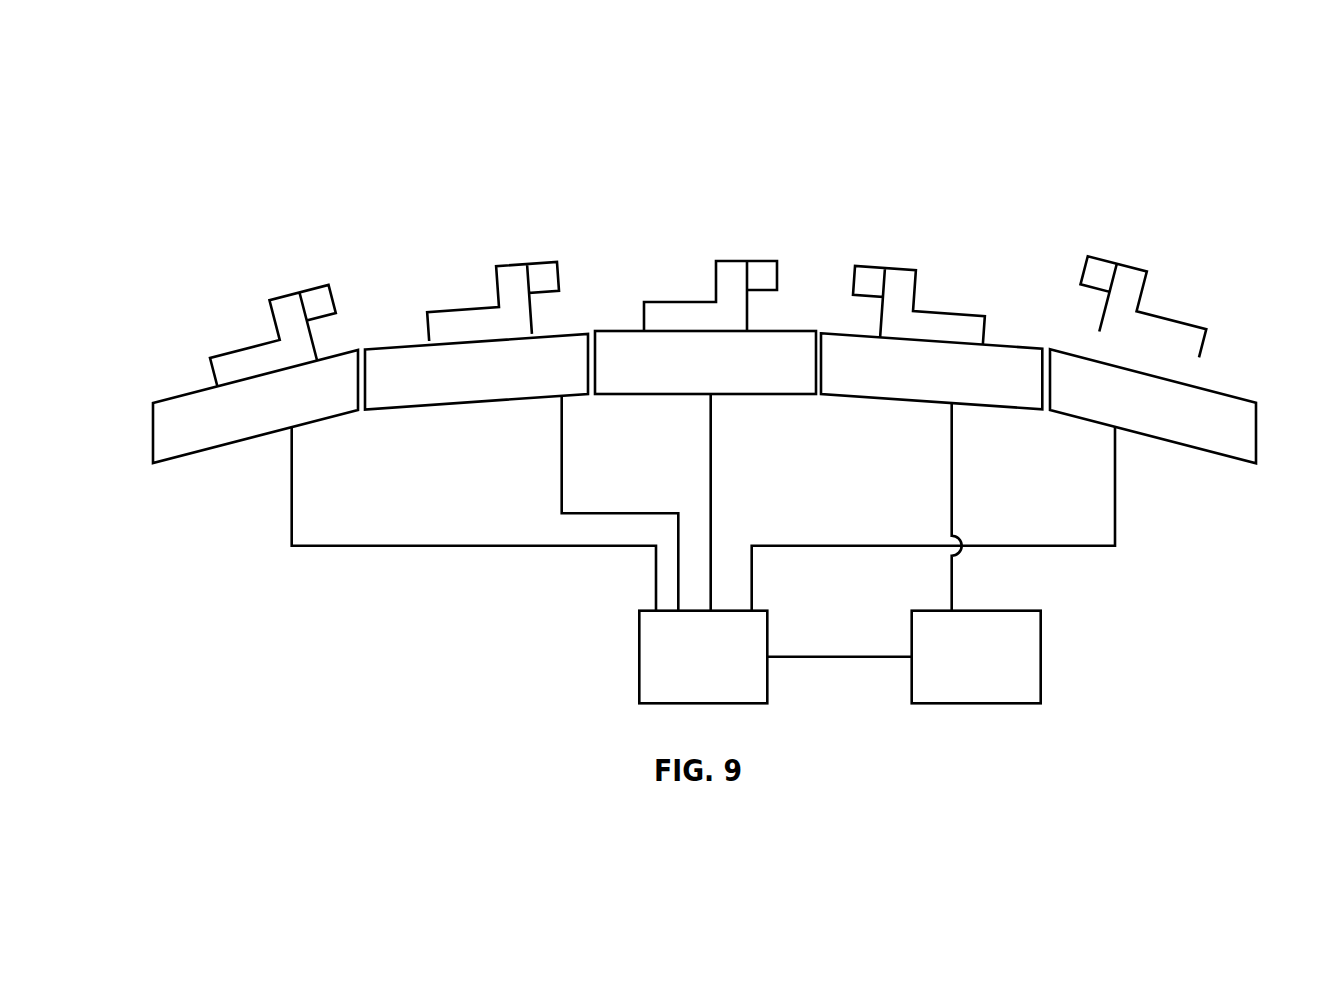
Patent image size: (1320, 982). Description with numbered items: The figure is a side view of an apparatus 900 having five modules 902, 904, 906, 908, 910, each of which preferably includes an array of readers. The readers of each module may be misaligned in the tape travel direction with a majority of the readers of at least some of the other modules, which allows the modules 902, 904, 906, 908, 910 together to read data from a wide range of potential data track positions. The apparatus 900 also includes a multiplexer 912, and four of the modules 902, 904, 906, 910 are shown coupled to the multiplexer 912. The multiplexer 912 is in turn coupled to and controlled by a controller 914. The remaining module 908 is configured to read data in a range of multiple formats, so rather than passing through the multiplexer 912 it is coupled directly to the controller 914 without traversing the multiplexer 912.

The apparatus 900 is at (247, 142).
The module 902 is at (268, 278).
The module 904 is at (497, 247).
The module 906 is at (717, 242).
The module 908 is at (908, 248).
The module 910 is at (1140, 280).
The multiplexer 912 is at (685, 668).
The controller 914 is at (976, 657).